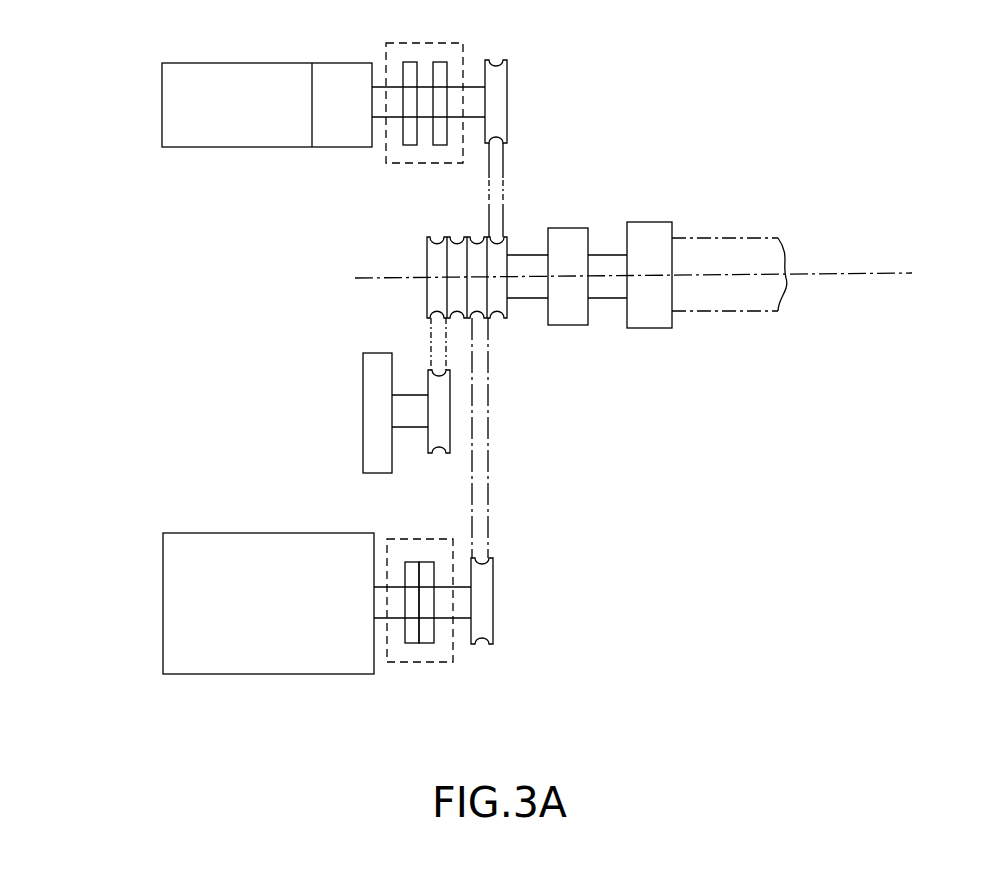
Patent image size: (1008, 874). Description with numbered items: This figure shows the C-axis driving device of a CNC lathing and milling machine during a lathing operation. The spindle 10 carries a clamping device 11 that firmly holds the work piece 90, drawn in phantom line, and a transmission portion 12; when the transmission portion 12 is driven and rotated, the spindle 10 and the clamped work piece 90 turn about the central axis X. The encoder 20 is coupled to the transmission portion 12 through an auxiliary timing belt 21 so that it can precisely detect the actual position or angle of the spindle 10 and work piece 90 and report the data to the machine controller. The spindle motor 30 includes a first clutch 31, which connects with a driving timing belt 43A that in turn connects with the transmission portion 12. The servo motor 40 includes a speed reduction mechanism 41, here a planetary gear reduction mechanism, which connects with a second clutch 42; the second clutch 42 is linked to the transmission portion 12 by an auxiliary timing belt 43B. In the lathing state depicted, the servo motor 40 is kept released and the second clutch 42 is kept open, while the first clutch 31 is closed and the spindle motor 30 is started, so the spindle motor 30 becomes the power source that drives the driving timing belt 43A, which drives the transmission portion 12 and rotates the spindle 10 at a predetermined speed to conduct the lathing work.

The spindle 10 is at (524, 290).
The clamping device 11 is at (652, 230).
The transmission portion 12 is at (497, 307).
The encoder 20 is at (368, 403).
The auxiliary timing belt 21 is at (428, 330).
The spindle motor 30 is at (178, 589).
The first clutch 31 is at (387, 540).
The servo motor 40 is at (202, 139).
The speed reduction mechanism 41 is at (335, 139).
The second clutch 42 is at (407, 165).
The driving timing belt 43A is at (488, 508).
The auxiliary timing belt 43B is at (503, 172).
The work piece 90 is at (722, 237).
The central axis X is at (830, 273).